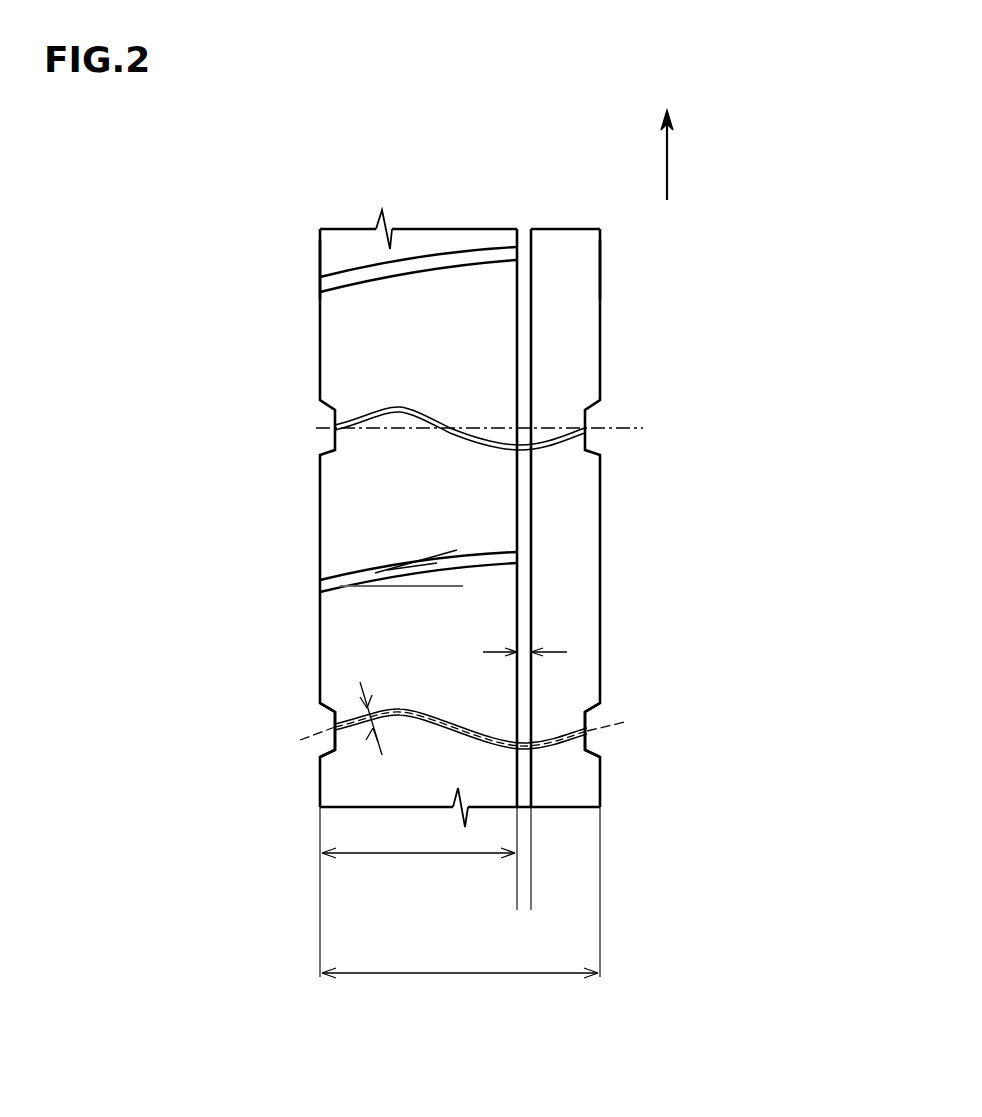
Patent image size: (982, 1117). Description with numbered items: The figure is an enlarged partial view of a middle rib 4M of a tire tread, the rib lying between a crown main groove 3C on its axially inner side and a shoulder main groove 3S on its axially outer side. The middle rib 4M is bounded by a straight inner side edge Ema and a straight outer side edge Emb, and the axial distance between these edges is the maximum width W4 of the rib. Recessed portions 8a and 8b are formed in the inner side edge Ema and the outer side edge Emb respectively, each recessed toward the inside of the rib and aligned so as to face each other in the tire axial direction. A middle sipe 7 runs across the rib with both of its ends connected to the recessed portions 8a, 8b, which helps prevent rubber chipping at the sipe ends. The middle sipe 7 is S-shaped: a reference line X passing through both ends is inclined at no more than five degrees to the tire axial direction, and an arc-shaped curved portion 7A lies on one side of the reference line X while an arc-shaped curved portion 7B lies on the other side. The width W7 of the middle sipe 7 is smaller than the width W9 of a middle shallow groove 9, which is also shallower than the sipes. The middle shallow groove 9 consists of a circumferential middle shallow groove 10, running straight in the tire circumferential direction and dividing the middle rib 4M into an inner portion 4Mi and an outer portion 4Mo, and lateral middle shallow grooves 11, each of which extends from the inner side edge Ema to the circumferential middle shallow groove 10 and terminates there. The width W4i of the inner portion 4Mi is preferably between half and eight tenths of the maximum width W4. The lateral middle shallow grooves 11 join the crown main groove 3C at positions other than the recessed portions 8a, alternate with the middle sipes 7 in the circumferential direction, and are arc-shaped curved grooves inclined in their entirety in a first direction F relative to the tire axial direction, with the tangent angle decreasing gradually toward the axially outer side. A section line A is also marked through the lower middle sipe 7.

The middle rib 4M is at (414, 168).
The middle shallow groove 9 is at (588, 155).
The circumferential middle shallow groove 10 is at (532, 310).
The lateral middle shallow groove 11 is at (470, 257).
The middle sipe 7 is at (541, 578).
The arc-shaped curved portion 7A is at (403, 412).
The arc-shaped curved portion 7B is at (550, 440).
The recessed portion 8a is at (322, 717).
The recessed portion 8b is at (615, 750).
The crown main groove 3C is at (300, 362).
The shoulder main groove 3S is at (656, 362).
The inner side edge Ema is at (320, 257).
The outer side edge Emb is at (600, 255).
The reference line X is at (643, 428).
The first direction F is at (667, 155).
The width of middle shallow groove W9 is at (531, 653).
The width of middle sipe W7 is at (368, 714).
The section line A- A is at (462, 732).
The width of inner portion W4i is at (460, 892).
The inner portion 4Mi is at (513, 900).
The outer portion 4Mo is at (597, 900).
The maximum width of middle rib W4 is at (460, 986).